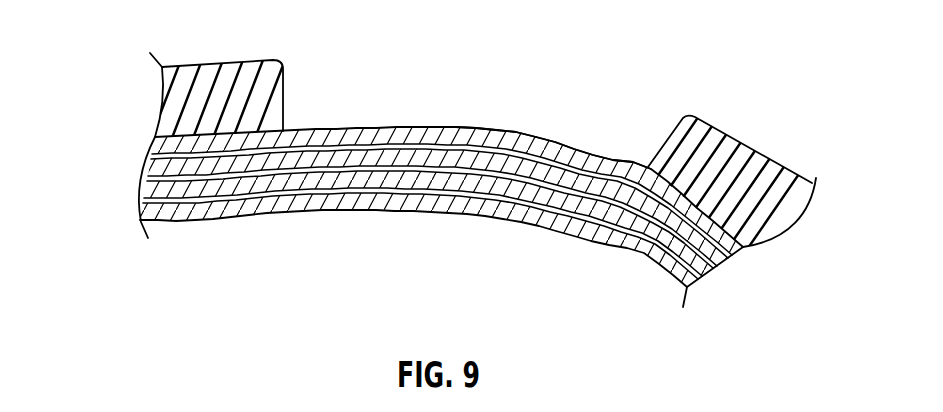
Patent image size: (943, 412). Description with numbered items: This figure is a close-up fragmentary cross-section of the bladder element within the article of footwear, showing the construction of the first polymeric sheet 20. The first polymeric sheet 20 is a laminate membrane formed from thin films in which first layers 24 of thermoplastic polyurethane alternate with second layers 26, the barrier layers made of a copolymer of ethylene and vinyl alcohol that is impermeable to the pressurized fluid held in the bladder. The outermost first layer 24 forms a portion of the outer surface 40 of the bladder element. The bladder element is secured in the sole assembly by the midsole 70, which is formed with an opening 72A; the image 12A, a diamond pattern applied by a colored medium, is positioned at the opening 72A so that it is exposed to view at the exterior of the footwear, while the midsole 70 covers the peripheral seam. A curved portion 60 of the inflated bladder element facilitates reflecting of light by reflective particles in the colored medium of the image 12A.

The image 12A is at (395, 127).
The first polymeric sheet 20 is at (723, 258).
The first layers 24 is at (152, 147).
The second layers 26 is at (645, 250).
The outer surface 40 is at (469, 124).
The curved portion 60 is at (596, 157).
The midsole 70 is at (757, 157).
The opening 72A is at (287, 68).